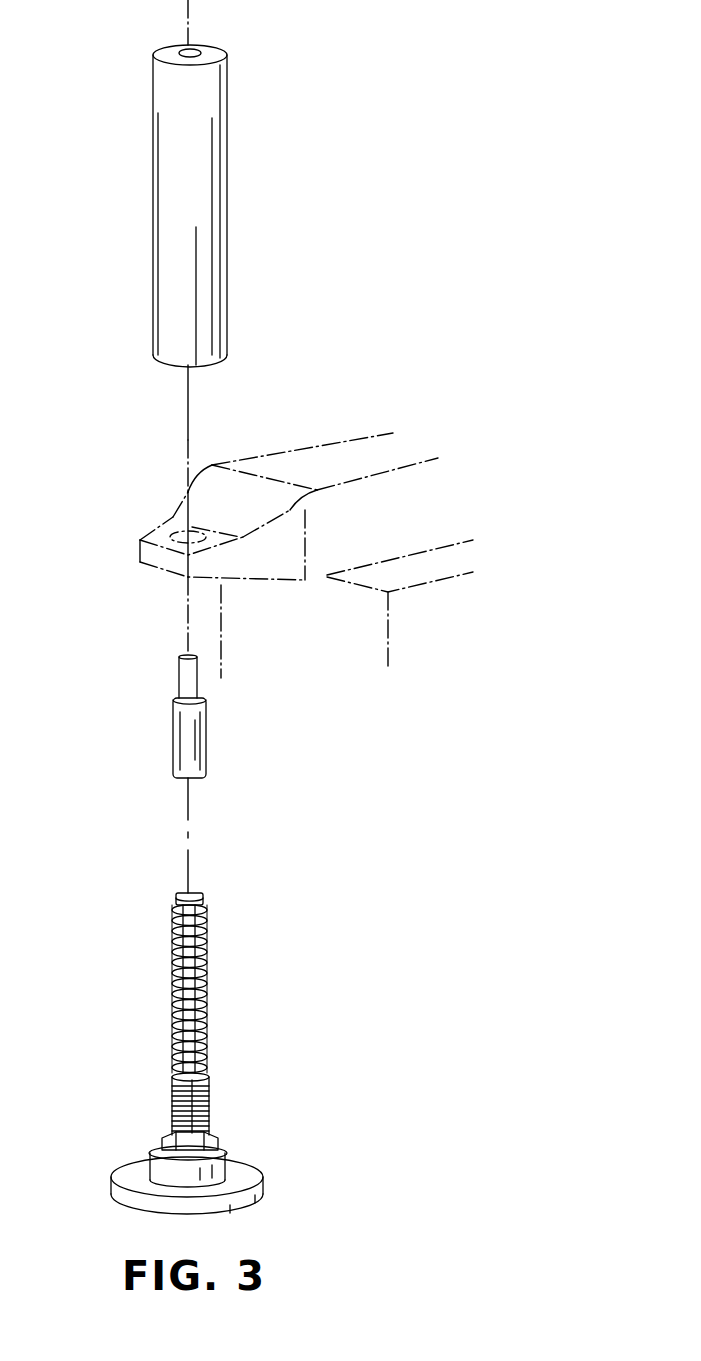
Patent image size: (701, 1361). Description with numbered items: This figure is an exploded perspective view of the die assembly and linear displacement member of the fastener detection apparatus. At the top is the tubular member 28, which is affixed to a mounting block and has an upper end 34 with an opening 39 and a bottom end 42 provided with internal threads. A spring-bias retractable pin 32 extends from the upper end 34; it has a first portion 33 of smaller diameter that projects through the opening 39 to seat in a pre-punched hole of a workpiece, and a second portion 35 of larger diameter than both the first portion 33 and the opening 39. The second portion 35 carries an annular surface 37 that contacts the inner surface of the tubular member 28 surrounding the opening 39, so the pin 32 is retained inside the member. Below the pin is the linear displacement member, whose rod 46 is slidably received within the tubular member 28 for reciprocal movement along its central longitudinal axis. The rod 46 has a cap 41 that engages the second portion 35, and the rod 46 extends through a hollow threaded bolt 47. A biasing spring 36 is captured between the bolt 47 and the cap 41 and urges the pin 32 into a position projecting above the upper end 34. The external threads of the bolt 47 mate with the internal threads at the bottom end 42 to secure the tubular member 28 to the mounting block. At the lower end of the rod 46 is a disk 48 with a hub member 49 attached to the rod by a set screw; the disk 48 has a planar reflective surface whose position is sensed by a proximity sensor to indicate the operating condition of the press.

The tubular member 28 is at (160, 185).
The upper end 34 is at (163, 52).
The opening 39 is at (200, 52).
The bottom end 42 is at (175, 367).
The spring-bias retractable pin 32 is at (191, 720).
The first portion 33 is at (197, 685).
The second portion 35 is at (195, 735).
The annular surface 37 is at (180, 698).
The cap 41 is at (203, 885).
The rod 46 is at (178, 975).
The biasing spring 36 is at (205, 1000).
The hollow threaded bolt 47 is at (210, 1102).
The hub member 49 is at (225, 1157).
The disk 48 is at (272, 1195).